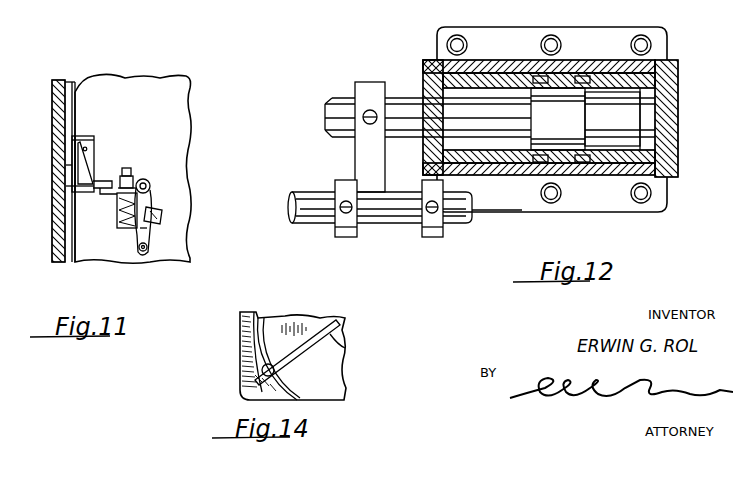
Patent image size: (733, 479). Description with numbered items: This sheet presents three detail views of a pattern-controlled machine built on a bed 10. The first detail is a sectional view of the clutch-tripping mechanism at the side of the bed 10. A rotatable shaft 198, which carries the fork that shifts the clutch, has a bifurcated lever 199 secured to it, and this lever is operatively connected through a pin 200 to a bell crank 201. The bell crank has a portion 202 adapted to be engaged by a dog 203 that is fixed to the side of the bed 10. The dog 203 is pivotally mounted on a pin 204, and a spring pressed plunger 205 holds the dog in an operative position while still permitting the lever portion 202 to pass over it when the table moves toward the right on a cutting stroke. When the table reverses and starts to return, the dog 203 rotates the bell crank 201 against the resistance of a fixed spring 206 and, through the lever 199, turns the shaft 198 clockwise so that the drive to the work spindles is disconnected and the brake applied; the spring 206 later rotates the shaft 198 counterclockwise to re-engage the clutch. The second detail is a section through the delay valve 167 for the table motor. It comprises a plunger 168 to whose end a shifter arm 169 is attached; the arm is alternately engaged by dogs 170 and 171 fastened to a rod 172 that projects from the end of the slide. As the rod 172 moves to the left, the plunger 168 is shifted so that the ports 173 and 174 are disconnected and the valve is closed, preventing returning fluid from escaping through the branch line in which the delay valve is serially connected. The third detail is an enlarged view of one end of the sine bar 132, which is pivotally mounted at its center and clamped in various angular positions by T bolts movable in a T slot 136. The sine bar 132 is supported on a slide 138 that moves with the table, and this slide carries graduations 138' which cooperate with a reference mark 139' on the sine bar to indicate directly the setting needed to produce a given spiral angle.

In FIG. 11, the bed 10 is at (52, 103).
In FIG. 11, the pin 204 is at (86, 138).
In FIG. 11, the dog 203 is at (95, 160).
In FIG. 11, the bell crank portion 202 is at (107, 180).
In FIG. 11, the spring pressed plunger 205 is at (72, 178).
In FIG. 11, the spring 206 is at (116, 218).
In FIG. 11, the bell crank 201 is at (155, 203).
In FIG. 11, the pin 200 is at (157, 220).
In FIG. 11, the bifurcated lever 199 is at (152, 242).
In FIG. 11, the rotatable shaft 198 is at (143, 252).
In FIG. 12, the delay valve 167 is at (437, 62).
In FIG. 12, the plunger 168 is at (395, 117).
In FIG. 12, the shifter arm 169 is at (355, 149).
In FIG. 12, the dog 170 is at (346, 238).
In FIG. 12, the dog 171 is at (428, 238).
In FIG. 12, the rod 172 is at (326, 212).
In FIG. 12, the port 173 is at (538, 62).
In FIG. 12, the port 174 is at (580, 62).
In FIG. 12, the T slot 136 is at (458, 4).
In FIG. 14, the T slot 136 is at (262, 330).
In FIG. 12, the sine bar 132 is at (525, 4).
In FIG. 14, the sine bar 132 is at (318, 356).
In FIG. 14, the slide 138 is at (312, 356).
In FIG. 14, the graduations 138' is at (227, 352).
In FIG. 14, the reference mark 139' is at (234, 380).